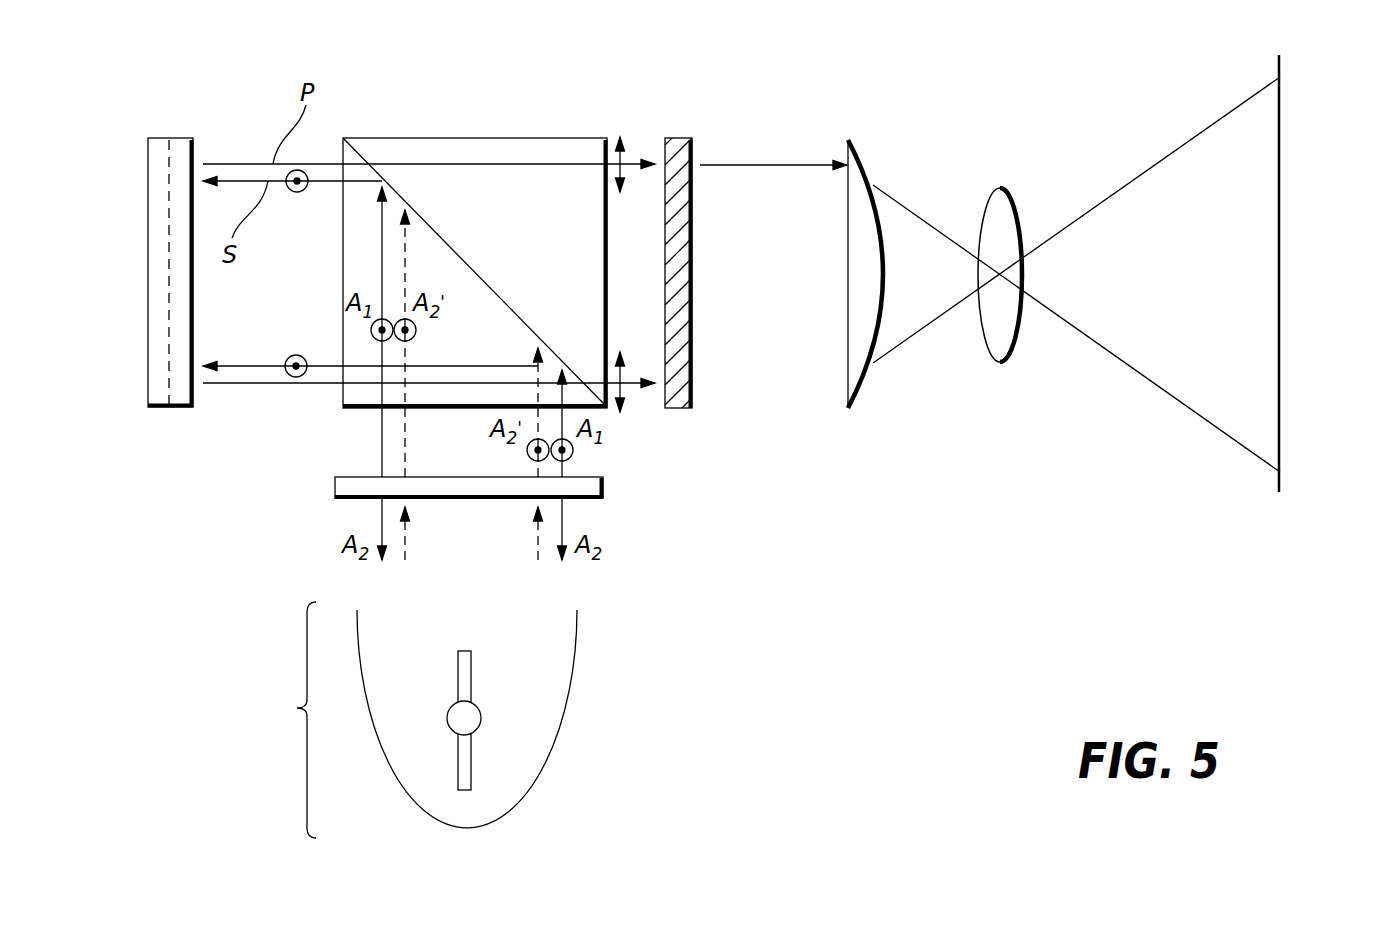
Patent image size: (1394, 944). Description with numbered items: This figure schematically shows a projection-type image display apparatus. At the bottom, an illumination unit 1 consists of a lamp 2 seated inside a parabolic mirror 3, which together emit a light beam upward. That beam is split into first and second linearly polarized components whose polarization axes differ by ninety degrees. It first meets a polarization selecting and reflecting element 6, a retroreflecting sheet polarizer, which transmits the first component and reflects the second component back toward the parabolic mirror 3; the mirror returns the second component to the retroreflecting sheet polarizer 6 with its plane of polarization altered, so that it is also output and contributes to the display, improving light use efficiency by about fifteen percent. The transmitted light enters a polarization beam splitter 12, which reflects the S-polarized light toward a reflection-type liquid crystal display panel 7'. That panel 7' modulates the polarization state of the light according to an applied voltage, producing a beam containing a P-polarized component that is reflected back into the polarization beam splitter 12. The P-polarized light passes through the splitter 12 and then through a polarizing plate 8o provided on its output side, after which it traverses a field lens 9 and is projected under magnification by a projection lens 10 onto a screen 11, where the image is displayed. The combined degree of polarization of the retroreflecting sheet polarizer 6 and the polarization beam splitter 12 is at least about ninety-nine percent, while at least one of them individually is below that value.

The illumination unit 1 is at (297, 708).
The lamp 2 is at (482, 720).
The parabolic mirror 3 is at (555, 732).
The polarization selecting and reflecting element 6 is at (334, 487).
The reflection-type liquid crystal display panel 7' is at (187, 228).
The polarizing plate 8o is at (690, 138).
The field lens 9 is at (870, 160).
The projection lens 10 is at (999, 188).
The screen 11 is at (1280, 272).
The polarization beam splitter 12 is at (473, 138).